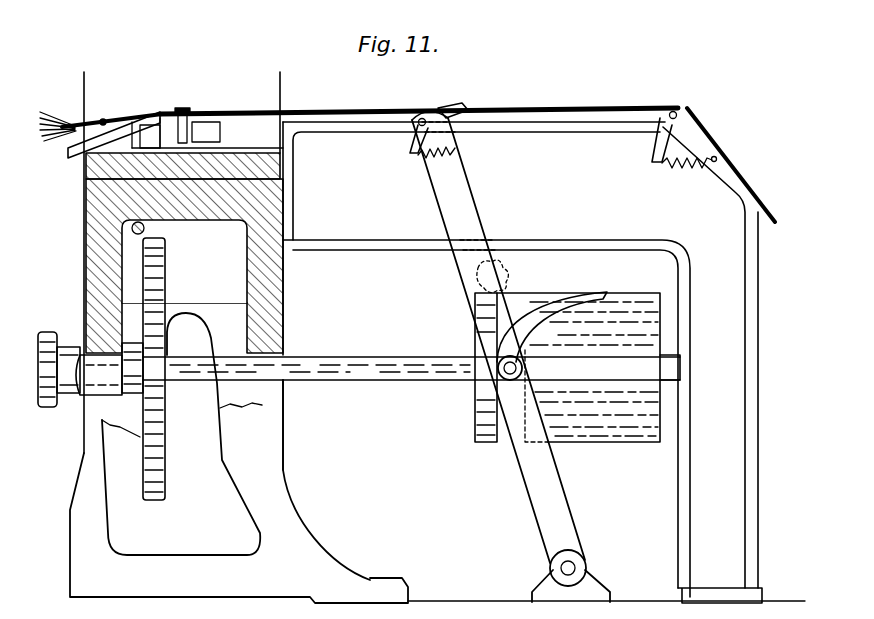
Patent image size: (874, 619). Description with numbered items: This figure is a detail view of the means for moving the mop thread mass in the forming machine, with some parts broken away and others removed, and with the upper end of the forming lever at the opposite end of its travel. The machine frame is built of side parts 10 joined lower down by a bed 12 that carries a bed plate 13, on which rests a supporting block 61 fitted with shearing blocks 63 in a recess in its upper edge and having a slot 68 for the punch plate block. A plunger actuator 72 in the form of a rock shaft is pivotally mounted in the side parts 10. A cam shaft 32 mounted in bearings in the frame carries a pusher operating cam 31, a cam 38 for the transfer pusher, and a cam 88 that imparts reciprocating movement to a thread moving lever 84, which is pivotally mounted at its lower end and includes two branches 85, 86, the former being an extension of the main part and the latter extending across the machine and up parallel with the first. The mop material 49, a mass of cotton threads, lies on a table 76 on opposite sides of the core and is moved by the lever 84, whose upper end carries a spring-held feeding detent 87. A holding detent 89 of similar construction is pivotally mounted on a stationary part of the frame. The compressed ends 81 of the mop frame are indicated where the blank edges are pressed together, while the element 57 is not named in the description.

The side parts 10 is at (287, 517).
The bed 12 is at (90, 272).
The bed plate 13 is at (90, 176).
The pusher operating cam 31 is at (50, 410).
The cam shaft 32 is at (371, 365).
The cam 38 is at (172, 480).
The mop material 49 is at (232, 118).
The bracket 57 is at (158, 141).
The supporting block 61 is at (220, 133).
The shearing blocks 63 is at (189, 111).
The slot 68 is at (168, 118).
The plunger actuator 72 is at (146, 228).
The table 76 is at (326, 120).
The ends 81 is at (444, 110).
The thread moving lever 84 is at (540, 487).
The branch 85 is at (475, 216).
The branch 86 is at (480, 272).
The feeding detent 87 is at (422, 116).
The cam 88 is at (631, 428).
The holding detent 89 is at (667, 113).